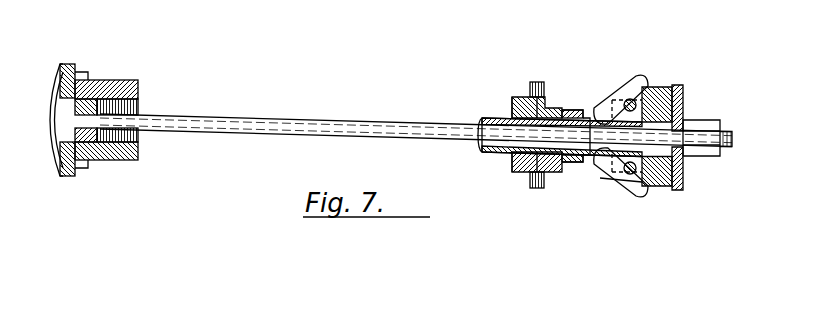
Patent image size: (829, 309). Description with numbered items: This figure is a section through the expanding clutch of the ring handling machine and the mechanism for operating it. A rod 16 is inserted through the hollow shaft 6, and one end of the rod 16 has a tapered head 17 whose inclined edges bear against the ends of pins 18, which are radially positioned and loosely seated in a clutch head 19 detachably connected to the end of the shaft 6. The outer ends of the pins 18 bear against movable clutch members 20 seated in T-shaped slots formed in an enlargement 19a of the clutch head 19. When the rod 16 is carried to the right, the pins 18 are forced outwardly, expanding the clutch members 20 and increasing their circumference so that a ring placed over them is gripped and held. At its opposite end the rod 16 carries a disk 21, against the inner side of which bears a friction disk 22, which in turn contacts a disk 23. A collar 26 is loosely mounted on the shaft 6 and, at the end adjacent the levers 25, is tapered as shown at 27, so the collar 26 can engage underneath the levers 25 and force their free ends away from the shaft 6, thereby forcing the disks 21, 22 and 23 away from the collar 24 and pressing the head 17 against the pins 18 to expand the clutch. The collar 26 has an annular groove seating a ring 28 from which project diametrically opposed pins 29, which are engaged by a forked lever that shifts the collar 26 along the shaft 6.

The hollow shaft 6 is at (490, 158).
The rod 16 is at (310, 128).
The tapered head 17 is at (58, 120).
The pins 18 is at (90, 100).
The clutch head 19 is at (104, 86).
The enlargement 19a is at (86, 76).
The movable clutch members 20 is at (70, 64).
The disk 21 is at (686, 116).
The friction disk 22 is at (660, 86).
The disk 23 is at (640, 190).
The collar 24 is at (600, 178).
The levers 25 is at (606, 104).
The collar 26 is at (514, 176).
The tapered end 27 is at (583, 115).
The ring 28 is at (523, 176).
The pins 29 is at (533, 82).